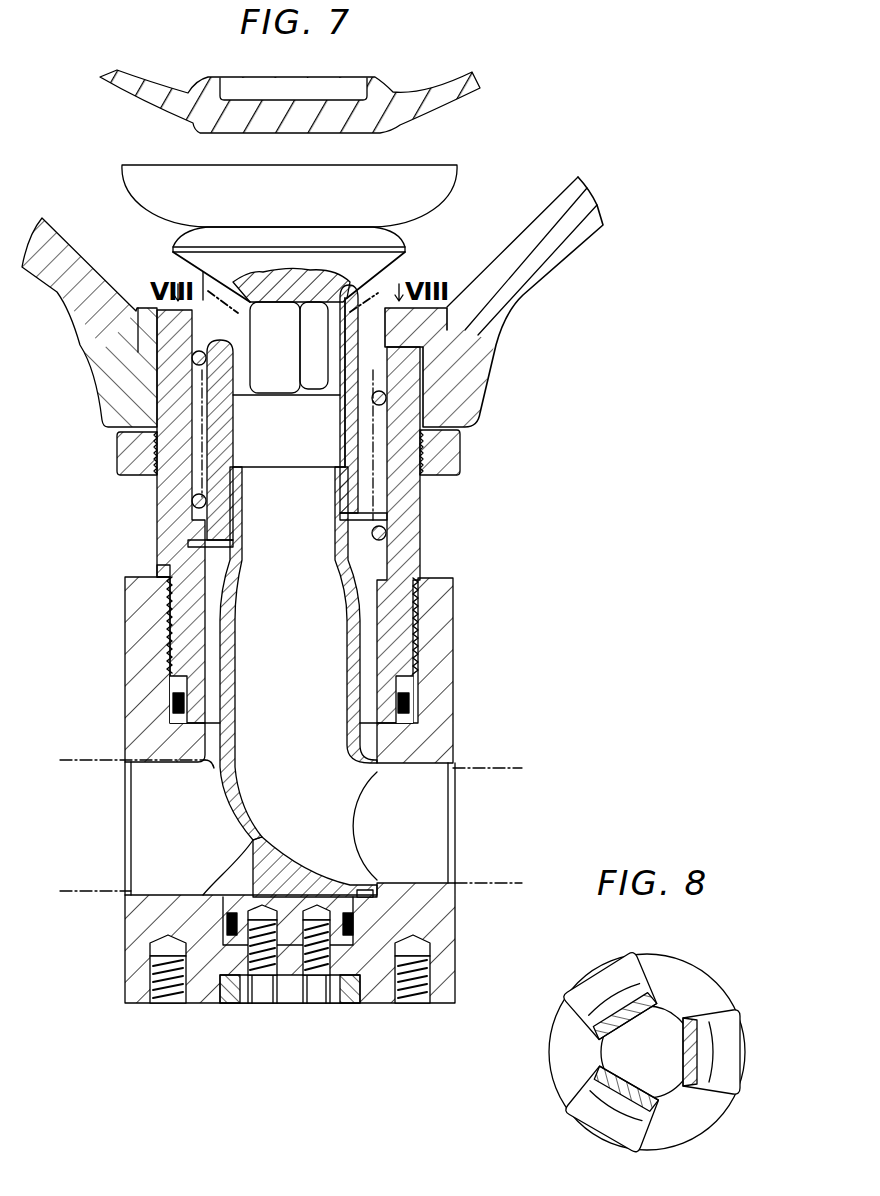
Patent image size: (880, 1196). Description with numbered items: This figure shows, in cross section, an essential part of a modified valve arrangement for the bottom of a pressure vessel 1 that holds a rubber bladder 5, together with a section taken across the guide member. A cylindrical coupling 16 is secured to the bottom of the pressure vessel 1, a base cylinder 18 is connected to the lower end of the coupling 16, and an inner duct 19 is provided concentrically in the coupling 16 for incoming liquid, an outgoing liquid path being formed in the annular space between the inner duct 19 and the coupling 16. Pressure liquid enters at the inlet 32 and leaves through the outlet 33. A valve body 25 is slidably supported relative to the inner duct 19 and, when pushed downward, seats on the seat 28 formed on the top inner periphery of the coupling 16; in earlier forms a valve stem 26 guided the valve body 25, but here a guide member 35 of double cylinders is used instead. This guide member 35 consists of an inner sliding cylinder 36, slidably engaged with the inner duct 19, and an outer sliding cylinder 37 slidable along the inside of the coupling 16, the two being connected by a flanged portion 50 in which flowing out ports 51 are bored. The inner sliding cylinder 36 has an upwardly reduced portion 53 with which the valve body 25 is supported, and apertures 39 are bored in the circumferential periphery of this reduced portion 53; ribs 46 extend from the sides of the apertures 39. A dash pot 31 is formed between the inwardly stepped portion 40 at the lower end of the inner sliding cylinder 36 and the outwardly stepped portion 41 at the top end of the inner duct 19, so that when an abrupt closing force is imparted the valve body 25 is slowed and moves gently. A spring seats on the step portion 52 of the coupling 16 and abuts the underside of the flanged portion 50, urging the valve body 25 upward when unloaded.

In FIG. 7, the pressure vessel 1 is at (567, 257).
In FIG. 7, the bladder 5 is at (465, 92).
In FIG. 7, the cylindrical coupling 16 is at (400, 556).
In FIG. 7, the base cylinder 18 is at (130, 945).
In FIG. 7, the inner duct 19 is at (227, 637).
In FIG. 7, the valve body 25 is at (390, 237).
In FIG. 7, the valve stem 26 is at (417, 512).
In FIG. 7, the seat 28 is at (127, 338).
In FIG. 7, the dash pot 31 is at (200, 497).
In FIG. 7, the inlet 32 is at (492, 768).
In FIG. 7, the outlet 33 is at (78, 760).
In FIG. 7, the guide member 35 is at (213, 414).
In FIG. 7, the inner cylinder 36 is at (120, 453).
In FIG. 7, the outer cylinder 37 is at (440, 365).
In FIG. 7, the apertures 39 is at (305, 318).
In FIG. 8, the apertures 39 is at (580, 1035).
In FIG. 7, the inwardly stepped portion 40 is at (193, 532).
In FIG. 7, the outwardly stepped portion 41 is at (213, 492).
In FIG. 7, the ribs 46 is at (470, 322).
In FIG. 8, the flange portion 50 is at (690, 978).
In FIG. 7, the flowing out ports 51 is at (183, 347).
In FIG. 8, the flowing out ports 51 is at (598, 980).
In FIG. 7, the step portion 52 is at (160, 560).
In FIG. 7, the upwardly reduced portion 53 is at (338, 385).
In FIG. 8, the upwardly reduced portion 53 is at (647, 1052).